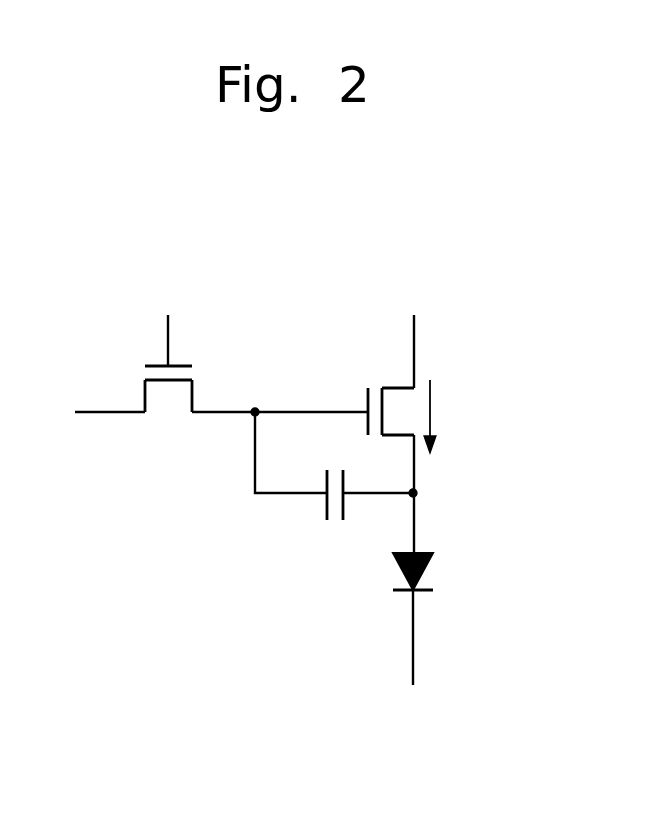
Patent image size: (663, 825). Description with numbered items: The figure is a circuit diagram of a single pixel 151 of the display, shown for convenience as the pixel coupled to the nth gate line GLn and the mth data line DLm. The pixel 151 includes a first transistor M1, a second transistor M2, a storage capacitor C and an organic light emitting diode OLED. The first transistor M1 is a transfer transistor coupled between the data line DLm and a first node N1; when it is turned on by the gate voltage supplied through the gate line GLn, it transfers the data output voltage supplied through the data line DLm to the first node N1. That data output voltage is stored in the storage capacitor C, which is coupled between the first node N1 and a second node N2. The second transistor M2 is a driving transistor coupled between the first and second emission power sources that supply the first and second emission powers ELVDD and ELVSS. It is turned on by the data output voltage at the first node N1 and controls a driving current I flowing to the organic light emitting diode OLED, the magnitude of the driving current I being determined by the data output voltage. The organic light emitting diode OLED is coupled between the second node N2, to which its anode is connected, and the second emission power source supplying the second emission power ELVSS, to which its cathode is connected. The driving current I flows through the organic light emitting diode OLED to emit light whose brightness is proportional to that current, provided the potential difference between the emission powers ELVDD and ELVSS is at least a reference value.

The pixel 151 is at (502, 218).
The data line DLm is at (85, 414).
The gate line GLn is at (167, 328).
The first transistor M1 is at (168, 402).
The second transistor M2 is at (391, 399).
The first node N1 is at (280, 399).
The second node N2 is at (428, 494).
The storage capacitor C is at (334, 480).
The organic light emitting diode OLED is at (426, 570).
The driving current I is at (435, 416).
The first emission power ELVDD is at (413, 339).
The second emission power ELVSS is at (408, 653).